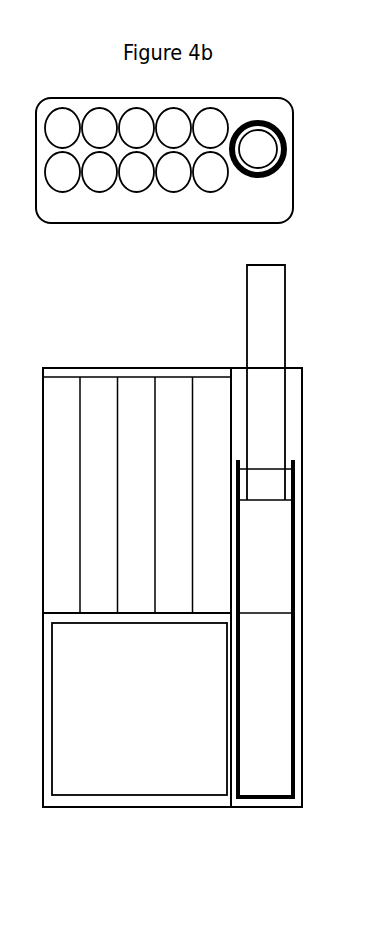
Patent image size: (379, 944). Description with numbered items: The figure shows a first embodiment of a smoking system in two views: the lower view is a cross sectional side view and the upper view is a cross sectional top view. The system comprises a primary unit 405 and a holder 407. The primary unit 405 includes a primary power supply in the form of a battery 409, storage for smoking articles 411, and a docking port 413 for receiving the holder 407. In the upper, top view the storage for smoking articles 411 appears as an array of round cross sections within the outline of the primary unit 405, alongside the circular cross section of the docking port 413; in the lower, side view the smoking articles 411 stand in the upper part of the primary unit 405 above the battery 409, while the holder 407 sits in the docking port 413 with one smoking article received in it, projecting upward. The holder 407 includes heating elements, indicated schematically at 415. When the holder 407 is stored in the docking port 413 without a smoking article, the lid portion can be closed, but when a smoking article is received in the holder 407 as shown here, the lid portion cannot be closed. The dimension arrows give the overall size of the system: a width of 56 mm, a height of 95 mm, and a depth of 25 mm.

The primary unit 405 is at (88, 223).
The holder 407 is at (265, 745).
The battery 409 is at (121, 716).
The storage for smoking articles 411 is at (137, 170).
The docking port 413 is at (293, 462).
The heating elements 415 is at (250, 573).
The depth 25 is at (304, 98).
The height 95 is at (322, 370).
The width 56 is at (292, 842).